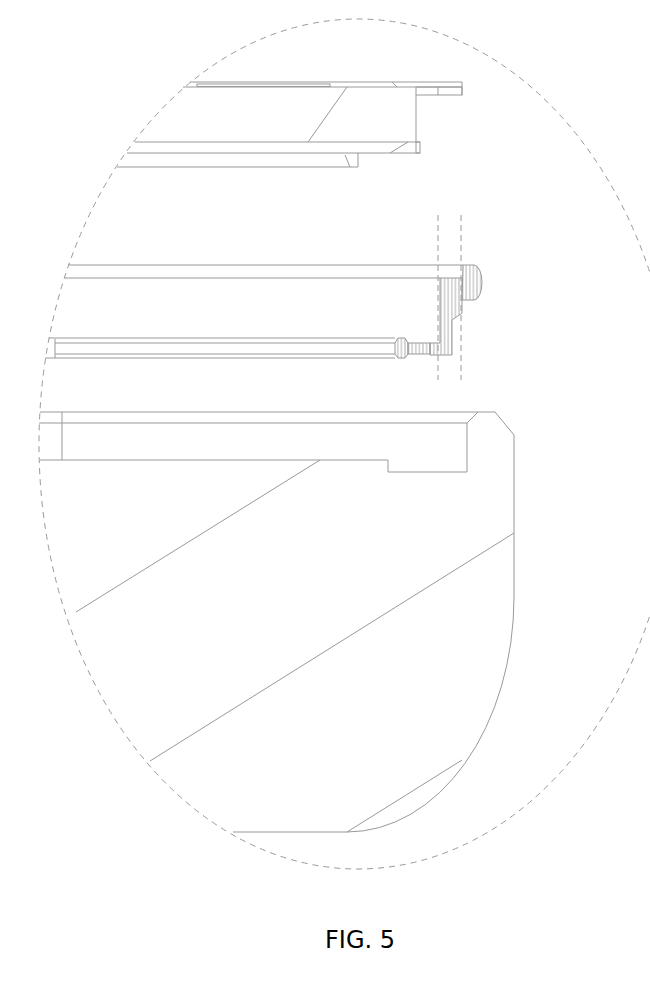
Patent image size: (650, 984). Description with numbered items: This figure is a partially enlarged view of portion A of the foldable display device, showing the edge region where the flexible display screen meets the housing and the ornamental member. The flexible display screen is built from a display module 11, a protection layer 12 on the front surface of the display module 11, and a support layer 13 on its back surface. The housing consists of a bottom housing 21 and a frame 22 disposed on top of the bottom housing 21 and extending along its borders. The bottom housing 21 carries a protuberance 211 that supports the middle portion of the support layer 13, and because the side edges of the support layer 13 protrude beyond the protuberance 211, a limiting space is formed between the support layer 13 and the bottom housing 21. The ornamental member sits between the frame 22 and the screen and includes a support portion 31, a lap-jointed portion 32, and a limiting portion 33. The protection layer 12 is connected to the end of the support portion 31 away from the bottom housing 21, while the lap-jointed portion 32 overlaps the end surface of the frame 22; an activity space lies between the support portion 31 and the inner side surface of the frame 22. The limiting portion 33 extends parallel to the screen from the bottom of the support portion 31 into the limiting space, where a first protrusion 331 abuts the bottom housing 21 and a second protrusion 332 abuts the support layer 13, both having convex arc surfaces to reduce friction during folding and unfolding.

The display module 11 is at (413, 128).
The protection layer 12 is at (453, 84).
The support layer 13 is at (420, 152).
The bottom housing 21 is at (498, 527).
The protuberance 211 is at (388, 463).
The frame 22 is at (513, 447).
The support portion 31 is at (445, 357).
The lap-jointed portion 32 is at (477, 272).
The limiting portion 33 is at (428, 342).
The first protrusion 331 is at (403, 359).
The second protrusion 332 is at (403, 338).
The portion A is at (503, 818).